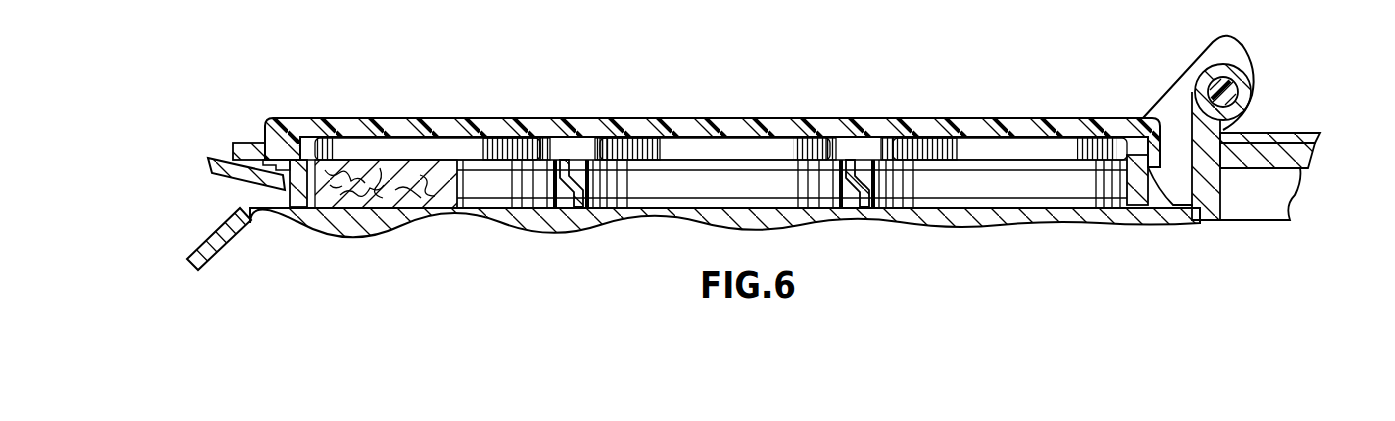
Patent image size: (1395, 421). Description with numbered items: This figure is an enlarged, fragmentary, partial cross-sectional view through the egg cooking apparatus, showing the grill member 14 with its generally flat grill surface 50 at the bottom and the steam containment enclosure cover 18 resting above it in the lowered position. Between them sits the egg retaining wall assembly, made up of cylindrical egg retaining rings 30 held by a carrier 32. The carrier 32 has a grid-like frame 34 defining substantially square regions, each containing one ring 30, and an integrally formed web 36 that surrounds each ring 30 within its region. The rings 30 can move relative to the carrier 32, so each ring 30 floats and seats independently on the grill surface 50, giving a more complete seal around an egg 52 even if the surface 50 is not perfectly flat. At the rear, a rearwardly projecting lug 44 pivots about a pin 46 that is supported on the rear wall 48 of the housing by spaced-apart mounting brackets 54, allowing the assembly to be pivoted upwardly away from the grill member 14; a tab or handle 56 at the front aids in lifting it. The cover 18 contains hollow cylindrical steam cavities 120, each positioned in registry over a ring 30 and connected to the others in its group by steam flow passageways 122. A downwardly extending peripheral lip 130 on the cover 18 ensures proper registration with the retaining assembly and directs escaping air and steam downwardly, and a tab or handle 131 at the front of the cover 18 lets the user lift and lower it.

The grill member 14 is at (351, 228).
The steam containment enclosure cover 18 is at (300, 116).
The egg retaining ring 30 is at (493, 187).
The carrier 32 is at (573, 180).
The grid-like frame 34 is at (292, 207).
The web 36 is at (573, 152).
The rearwardly projecting lug 44 is at (1173, 97).
The pin 46 is at (1240, 98).
The rear wall 48 is at (1222, 192).
The grill surface 50 is at (267, 206).
The egg 52 is at (405, 174).
The mounting bracket 54 is at (1228, 129).
The tab or handle 56 is at (237, 183).
The steam cavity 120 is at (333, 141).
The steam flow passageway 122 is at (500, 148).
The peripheral lip 130 is at (268, 166).
The tab or handle 131 is at (237, 147).